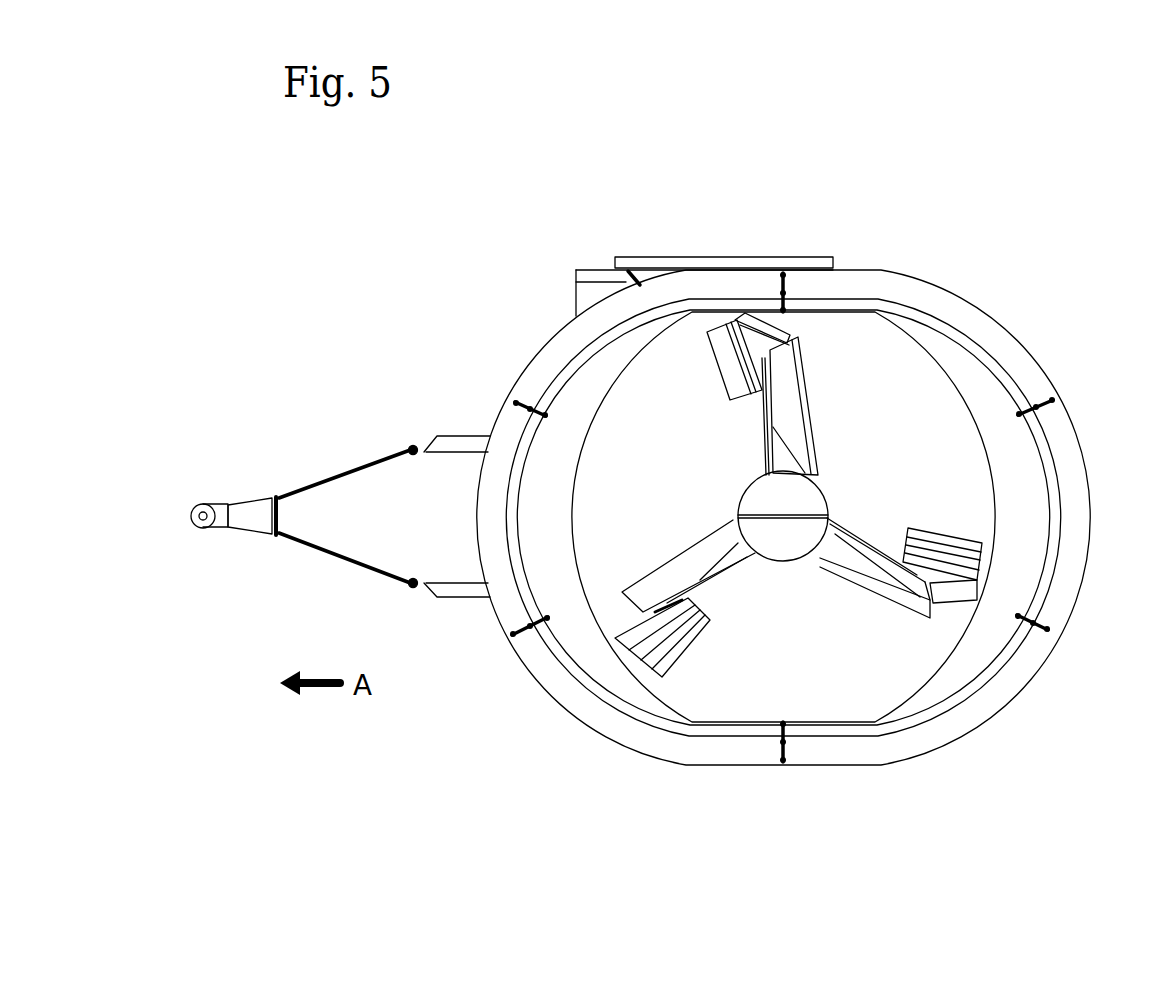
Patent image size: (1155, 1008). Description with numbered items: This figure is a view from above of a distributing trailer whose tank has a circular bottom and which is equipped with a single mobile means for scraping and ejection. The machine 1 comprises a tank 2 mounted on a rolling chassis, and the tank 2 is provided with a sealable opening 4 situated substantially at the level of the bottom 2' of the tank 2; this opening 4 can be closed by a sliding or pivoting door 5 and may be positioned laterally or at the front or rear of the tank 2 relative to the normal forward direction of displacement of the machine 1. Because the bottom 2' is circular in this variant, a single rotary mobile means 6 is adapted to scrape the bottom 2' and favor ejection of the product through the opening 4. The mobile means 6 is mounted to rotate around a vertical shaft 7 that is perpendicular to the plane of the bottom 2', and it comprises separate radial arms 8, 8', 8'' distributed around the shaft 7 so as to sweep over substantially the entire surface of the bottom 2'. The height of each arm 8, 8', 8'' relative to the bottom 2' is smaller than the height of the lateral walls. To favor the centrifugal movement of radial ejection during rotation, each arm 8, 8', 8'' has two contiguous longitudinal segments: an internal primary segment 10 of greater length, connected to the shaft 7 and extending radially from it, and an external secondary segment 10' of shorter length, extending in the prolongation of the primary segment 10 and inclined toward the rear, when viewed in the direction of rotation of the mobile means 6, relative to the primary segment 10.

The machine 1 is at (713, 797).
The tank 2 is at (789, 517).
The bottom 2' is at (797, 465).
The sealable opening 4 is at (641, 202).
The door 5 is at (683, 262).
The mobile means 6 is at (865, 525).
The vertical shaft 7 is at (790, 537).
The radial arm 8 is at (918, 694).
The radial arm 8' is at (670, 667).
The radial arm 8'' is at (809, 328).
The primary segment 10 is at (876, 672).
The secondary segment 10' is at (958, 677).